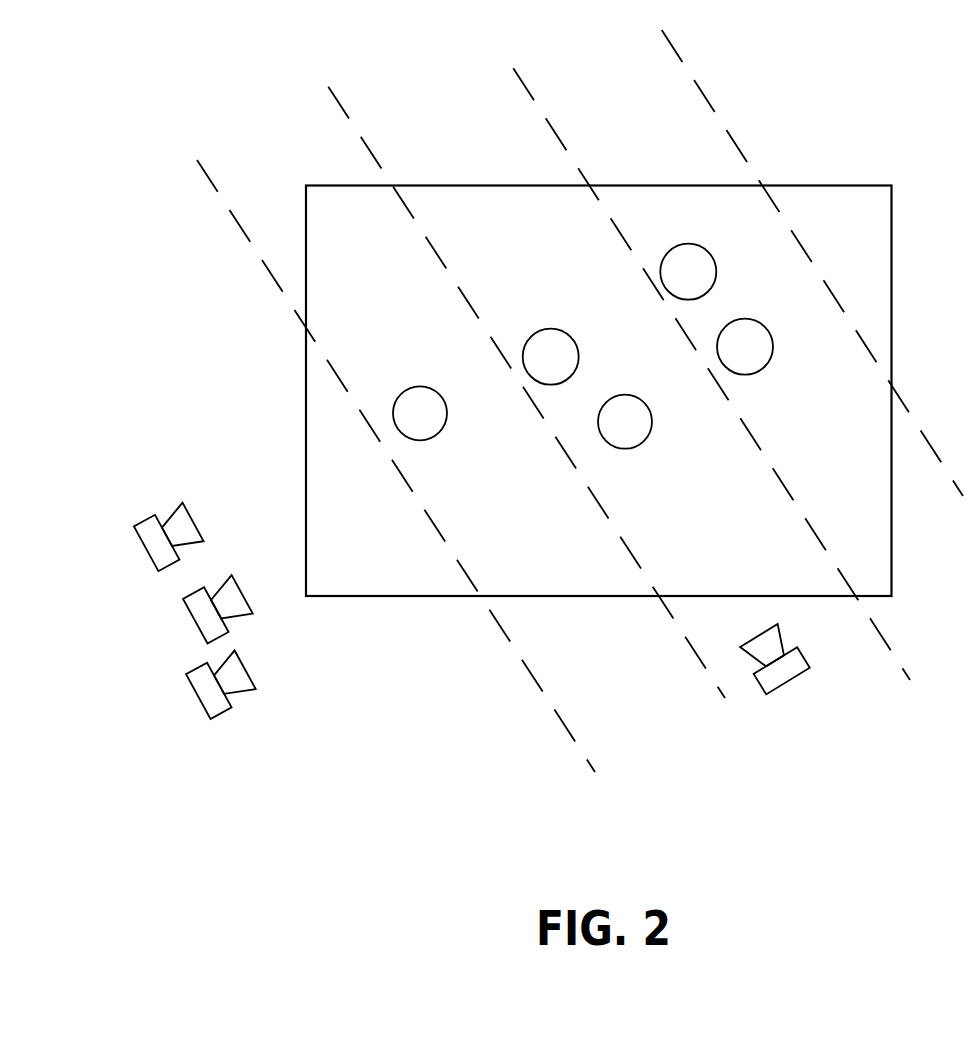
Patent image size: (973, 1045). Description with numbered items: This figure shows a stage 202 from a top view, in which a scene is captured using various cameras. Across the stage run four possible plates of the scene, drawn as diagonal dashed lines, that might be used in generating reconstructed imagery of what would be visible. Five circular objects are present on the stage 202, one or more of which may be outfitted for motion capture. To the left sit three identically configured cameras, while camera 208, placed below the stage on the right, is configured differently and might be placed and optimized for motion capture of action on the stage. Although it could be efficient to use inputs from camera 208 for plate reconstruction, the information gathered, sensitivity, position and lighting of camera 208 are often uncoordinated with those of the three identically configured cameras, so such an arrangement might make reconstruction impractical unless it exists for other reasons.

The stage 202 is at (858, 184).
The camera 208 is at (788, 682).